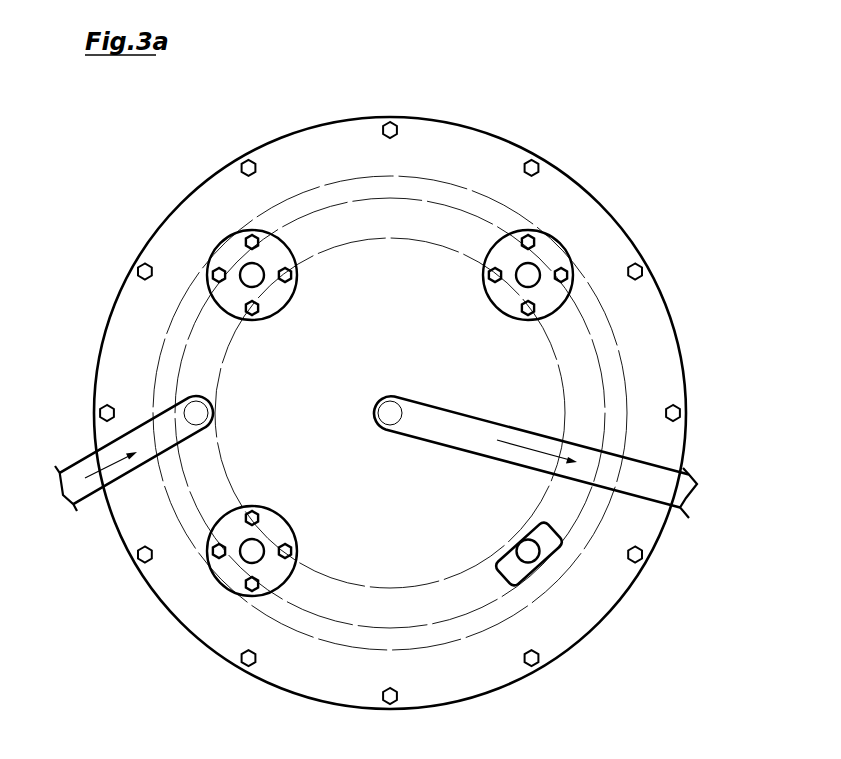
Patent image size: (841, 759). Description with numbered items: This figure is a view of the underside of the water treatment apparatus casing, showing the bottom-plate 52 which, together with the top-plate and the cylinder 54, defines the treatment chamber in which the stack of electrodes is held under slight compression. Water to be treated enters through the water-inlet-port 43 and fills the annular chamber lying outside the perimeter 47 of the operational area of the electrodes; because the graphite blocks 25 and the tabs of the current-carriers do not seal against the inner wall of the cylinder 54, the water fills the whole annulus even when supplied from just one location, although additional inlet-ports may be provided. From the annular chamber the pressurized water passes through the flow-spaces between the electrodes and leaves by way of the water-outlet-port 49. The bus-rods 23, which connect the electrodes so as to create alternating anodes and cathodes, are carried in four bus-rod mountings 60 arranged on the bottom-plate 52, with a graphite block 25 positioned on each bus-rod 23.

The bus-rod 23 is at (527, 550).
The graphite block 25 is at (508, 567).
The water-inlet-port 43 is at (74, 470).
The perimeter of the operational area of the electrodes 47 is at (440, 245).
The water-outlet-port 49 is at (665, 494).
The bottom-plate 52 is at (173, 210).
The cylinder 54 is at (332, 192).
The bus-rod mounting 60 is at (548, 253).